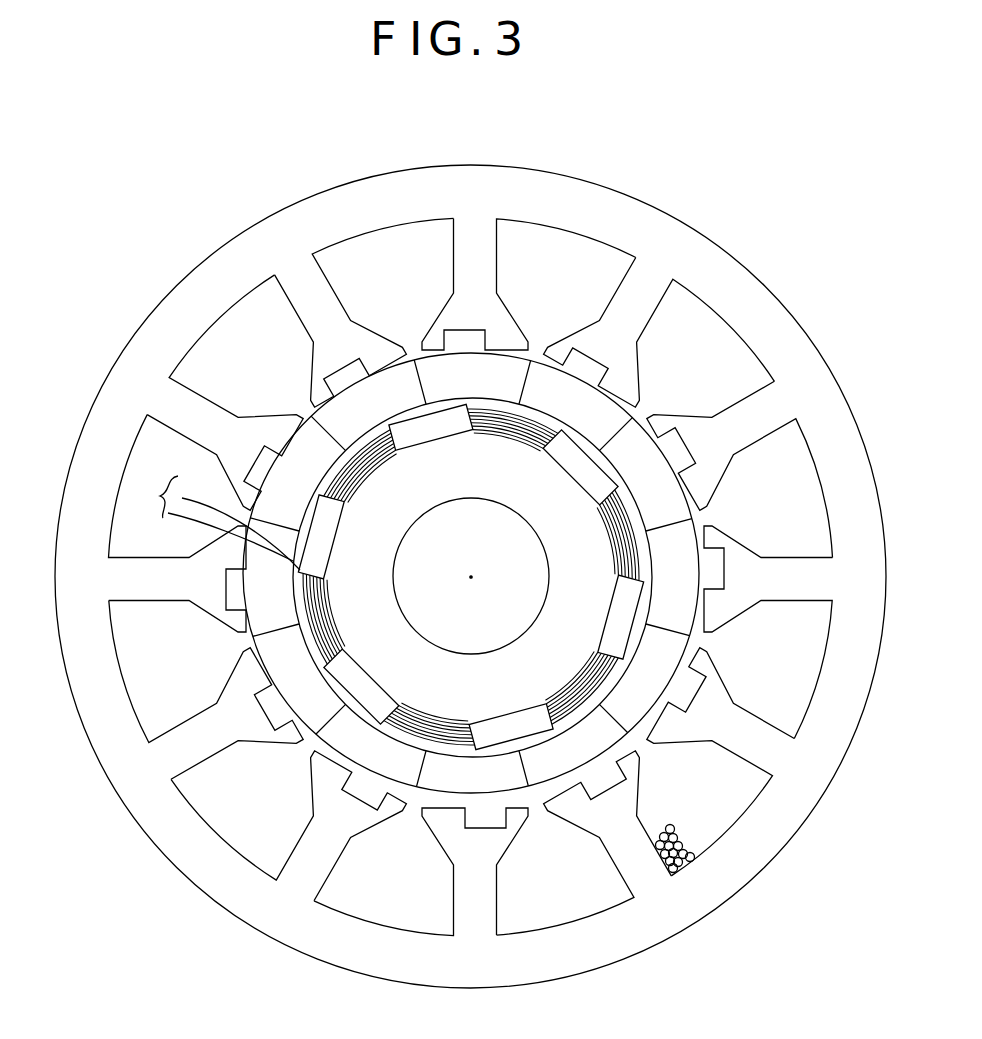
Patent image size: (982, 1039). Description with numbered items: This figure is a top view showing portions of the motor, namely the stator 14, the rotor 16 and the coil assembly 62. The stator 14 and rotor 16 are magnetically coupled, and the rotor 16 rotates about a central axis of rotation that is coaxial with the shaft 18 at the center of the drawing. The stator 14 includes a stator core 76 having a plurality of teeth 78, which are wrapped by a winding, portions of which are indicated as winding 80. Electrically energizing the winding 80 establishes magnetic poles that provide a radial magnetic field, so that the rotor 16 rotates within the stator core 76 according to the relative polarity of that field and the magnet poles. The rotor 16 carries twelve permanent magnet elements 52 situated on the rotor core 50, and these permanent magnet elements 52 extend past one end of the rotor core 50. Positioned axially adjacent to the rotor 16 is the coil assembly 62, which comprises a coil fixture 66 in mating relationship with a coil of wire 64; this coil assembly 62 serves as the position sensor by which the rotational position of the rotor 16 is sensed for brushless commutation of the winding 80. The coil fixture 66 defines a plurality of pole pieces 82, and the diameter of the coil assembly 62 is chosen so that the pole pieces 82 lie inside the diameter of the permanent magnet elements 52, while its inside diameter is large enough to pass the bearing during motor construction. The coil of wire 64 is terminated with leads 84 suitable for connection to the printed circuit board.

The stator 14 is at (766, 256).
The rotor 16 is at (297, 753).
The shaft 18 is at (500, 615).
The rotor core 50 is at (505, 482).
The permanent magnet elements 52 is at (394, 413).
The coil assembly 62 is at (563, 733).
The coil of wire 64 is at (323, 615).
The coil fixture 66 is at (333, 530).
The stator core 76 is at (446, 978).
The teeth 78 is at (337, 283).
The winding 80 is at (689, 846).
The pole pieces 82 is at (449, 443).
The leads 84 is at (146, 488).